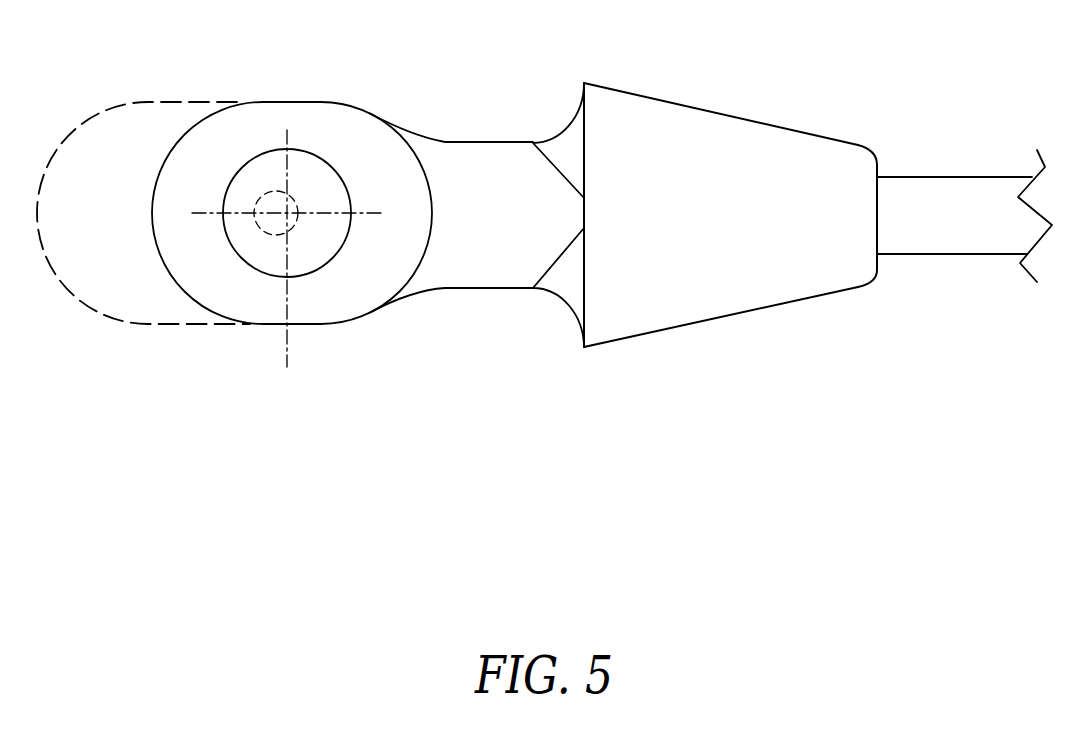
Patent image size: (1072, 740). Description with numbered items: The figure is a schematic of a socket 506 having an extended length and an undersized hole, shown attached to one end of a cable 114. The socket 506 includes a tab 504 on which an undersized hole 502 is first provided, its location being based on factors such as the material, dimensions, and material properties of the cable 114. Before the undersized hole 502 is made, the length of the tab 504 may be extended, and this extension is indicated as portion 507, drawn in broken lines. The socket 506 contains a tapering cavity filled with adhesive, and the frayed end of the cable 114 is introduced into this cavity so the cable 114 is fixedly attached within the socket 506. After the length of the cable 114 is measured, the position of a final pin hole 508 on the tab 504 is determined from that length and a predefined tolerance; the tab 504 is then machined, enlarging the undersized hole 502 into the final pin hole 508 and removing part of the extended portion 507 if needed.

The cable 114 is at (953, 188).
The undersized hole 502 is at (261, 198).
The tab 504 is at (368, 127).
The socket 506 is at (452, 308).
The portion 507 is at (128, 117).
The final pin hole 508 is at (308, 165).